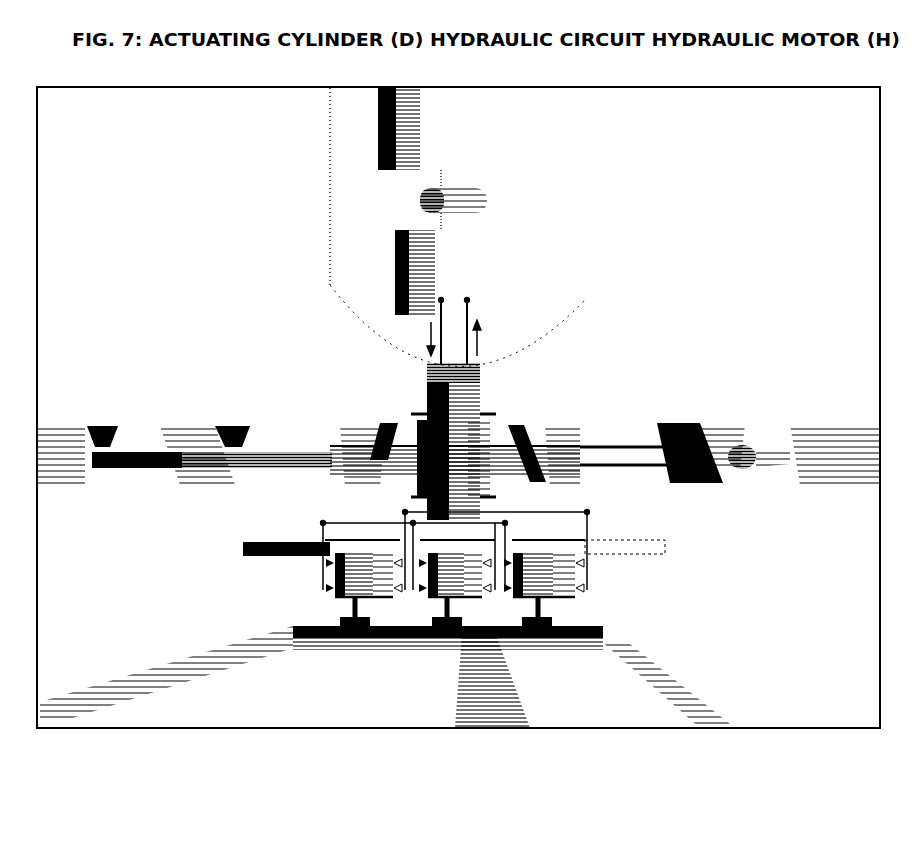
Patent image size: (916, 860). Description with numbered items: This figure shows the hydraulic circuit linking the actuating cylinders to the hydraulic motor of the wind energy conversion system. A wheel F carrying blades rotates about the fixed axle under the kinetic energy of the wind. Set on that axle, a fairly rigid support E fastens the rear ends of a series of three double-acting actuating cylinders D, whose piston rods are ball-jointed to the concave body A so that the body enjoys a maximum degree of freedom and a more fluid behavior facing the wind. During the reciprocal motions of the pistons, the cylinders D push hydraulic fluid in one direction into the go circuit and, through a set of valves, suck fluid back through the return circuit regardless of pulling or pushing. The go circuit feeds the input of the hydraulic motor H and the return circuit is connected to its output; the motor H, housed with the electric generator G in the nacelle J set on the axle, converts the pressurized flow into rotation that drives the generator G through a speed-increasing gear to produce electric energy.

The electric generator G is at (413, 113).
The hydraulic motor H is at (497, 262).
The nacelle J is at (331, 211).
The wheel F is at (782, 438).
The support E is at (238, 549).
The double-acting actuating cylinders D is at (586, 601).
The body A is at (194, 695).